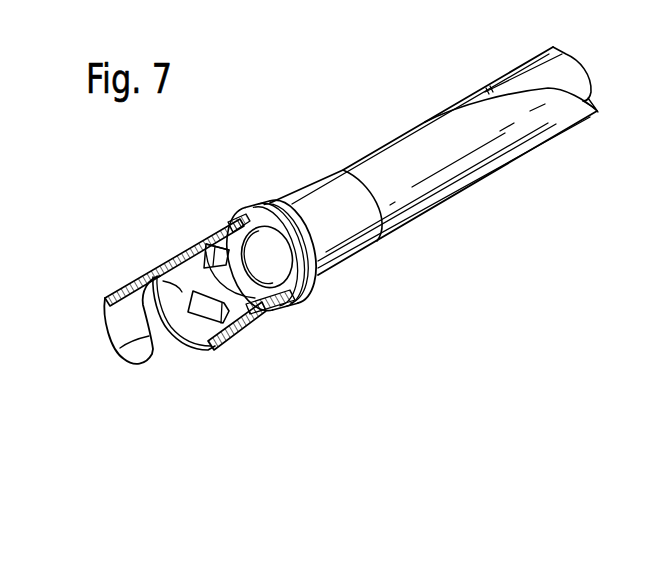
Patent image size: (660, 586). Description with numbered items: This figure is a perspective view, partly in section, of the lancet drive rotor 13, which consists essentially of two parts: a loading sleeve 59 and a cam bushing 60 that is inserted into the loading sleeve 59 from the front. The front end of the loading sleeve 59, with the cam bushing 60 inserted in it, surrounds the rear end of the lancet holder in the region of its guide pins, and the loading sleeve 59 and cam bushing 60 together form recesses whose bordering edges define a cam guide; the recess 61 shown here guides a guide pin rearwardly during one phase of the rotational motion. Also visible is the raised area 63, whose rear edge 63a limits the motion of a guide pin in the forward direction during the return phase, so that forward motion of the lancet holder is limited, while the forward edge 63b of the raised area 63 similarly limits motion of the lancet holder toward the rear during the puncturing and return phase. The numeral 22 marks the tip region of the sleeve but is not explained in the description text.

The lancet drive rotor 13 is at (375, 172).
The loading sleeve 59 is at (435, 142).
The bevelled distal tip 22 is at (541, 93).
The raised area 63 is at (233, 316).
The cam bushing 60 is at (232, 346).
The recess 61 is at (165, 266).
The rear edge 63a is at (224, 261).
The forward edge 63b is at (210, 320).